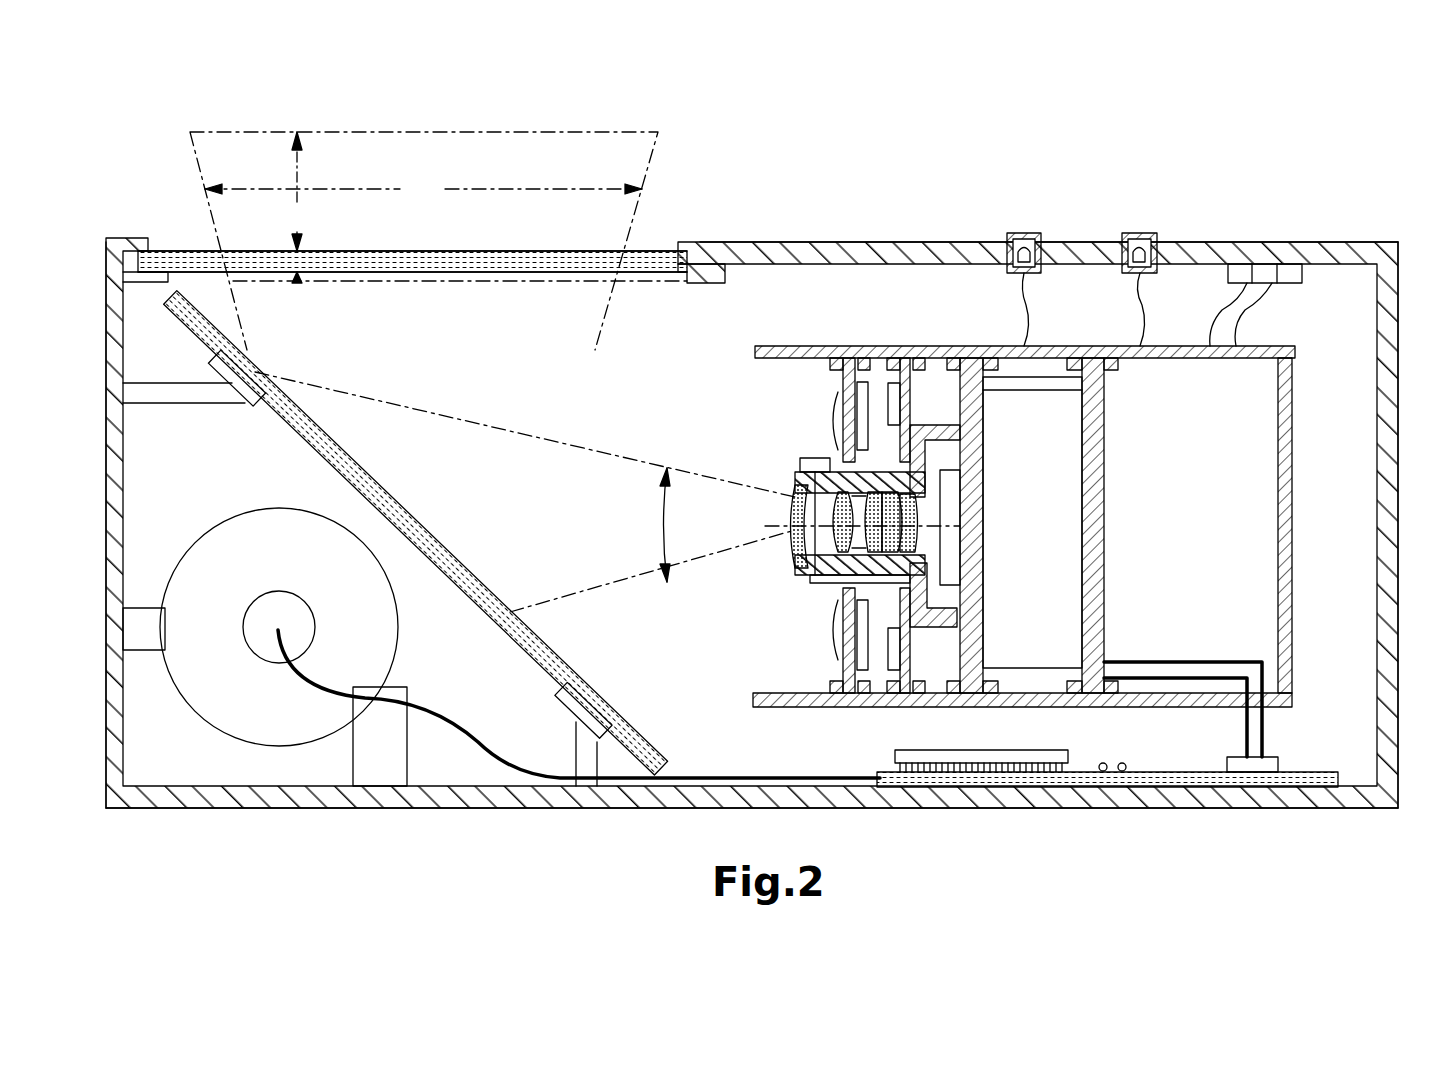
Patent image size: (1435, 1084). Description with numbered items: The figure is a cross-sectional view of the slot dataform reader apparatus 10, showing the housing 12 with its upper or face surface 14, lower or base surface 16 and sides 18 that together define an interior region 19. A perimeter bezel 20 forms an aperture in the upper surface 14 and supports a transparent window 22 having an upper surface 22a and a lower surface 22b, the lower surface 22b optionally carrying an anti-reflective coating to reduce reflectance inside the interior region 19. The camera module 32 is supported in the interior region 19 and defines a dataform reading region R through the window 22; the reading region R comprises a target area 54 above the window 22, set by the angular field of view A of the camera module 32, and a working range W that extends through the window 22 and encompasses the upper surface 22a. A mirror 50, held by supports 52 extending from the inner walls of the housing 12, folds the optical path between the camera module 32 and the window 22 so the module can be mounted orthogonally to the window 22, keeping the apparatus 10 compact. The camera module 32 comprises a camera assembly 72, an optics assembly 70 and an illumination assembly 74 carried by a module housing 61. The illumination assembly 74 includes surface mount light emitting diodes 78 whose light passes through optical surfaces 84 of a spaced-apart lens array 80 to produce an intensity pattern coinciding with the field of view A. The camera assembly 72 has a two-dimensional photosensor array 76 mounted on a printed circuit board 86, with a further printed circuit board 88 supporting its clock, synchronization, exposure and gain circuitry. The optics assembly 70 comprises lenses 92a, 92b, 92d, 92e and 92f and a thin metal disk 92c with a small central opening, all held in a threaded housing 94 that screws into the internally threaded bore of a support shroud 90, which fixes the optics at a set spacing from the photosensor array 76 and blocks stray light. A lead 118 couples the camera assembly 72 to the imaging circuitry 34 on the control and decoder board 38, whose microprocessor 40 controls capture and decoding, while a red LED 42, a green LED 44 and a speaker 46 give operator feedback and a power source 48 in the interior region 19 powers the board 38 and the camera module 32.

The slot dataform reader apparatus 10 is at (1350, 145).
The housing 12 is at (1355, 172).
The upper or face surface 14 is at (1345, 248).
The lower or base surface 16 is at (226, 808).
The sides 18 is at (106, 562).
The interior region 19 is at (630, 658).
The perimeter bezel 20 is at (684, 242).
The window 22 is at (365, 272).
The upper surface of the window 22a is at (335, 251).
The lower surface of the window 22b is at (470, 272).
The camera module 32 is at (735, 340).
The imaging circuitry 34 is at (885, 770).
The control and decoder board 38 is at (1152, 772).
The microprocessor 40 is at (978, 787).
The red LED 42 is at (1024, 233).
The green LED 44 is at (1140, 233).
The speaker 46 is at (1240, 264).
The power source 48 is at (282, 747).
The mirror 50 is at (455, 610).
The supports 52 is at (195, 394).
The target area 54 is at (423, 189).
The housing for the camera module 61 is at (1292, 578).
The optics assembly 70 is at (790, 515).
The camera assembly 72 is at (1130, 468).
The illumination assembly 74 is at (752, 360).
The photosensor array 76 is at (960, 495).
The surface mount light emitting diodes 78 is at (860, 460).
The lens array 80 is at (830, 374).
The optical surfaces 84 is at (835, 420).
The printed circuit board 86 is at (983, 632).
The printed circuit board 88 is at (1104, 432).
The support shroud 90 is at (822, 575).
The lens 92a is at (838, 540).
The lens 92b is at (868, 548).
The thin metal disk 92c is at (884, 560).
The lens 92d is at (915, 510).
The lens 92e is at (898, 553).
The lens 92f is at (900, 530).
The housing 94 is at (795, 485).
The lead 118 is at (1262, 724).
The dataform reading region R is at (548, 132).
The working range W is at (297, 207).
The angular field of view A is at (661, 525).